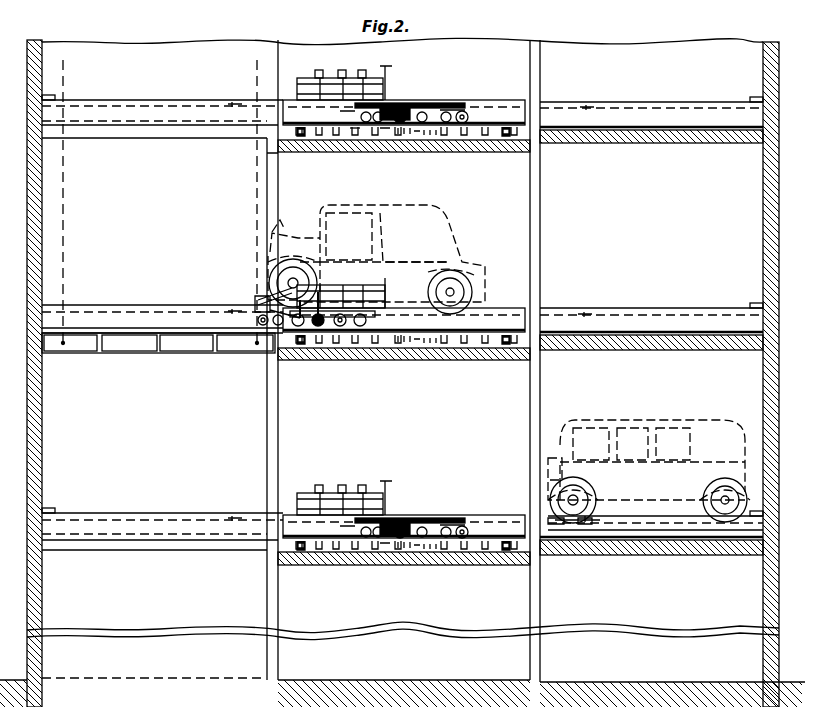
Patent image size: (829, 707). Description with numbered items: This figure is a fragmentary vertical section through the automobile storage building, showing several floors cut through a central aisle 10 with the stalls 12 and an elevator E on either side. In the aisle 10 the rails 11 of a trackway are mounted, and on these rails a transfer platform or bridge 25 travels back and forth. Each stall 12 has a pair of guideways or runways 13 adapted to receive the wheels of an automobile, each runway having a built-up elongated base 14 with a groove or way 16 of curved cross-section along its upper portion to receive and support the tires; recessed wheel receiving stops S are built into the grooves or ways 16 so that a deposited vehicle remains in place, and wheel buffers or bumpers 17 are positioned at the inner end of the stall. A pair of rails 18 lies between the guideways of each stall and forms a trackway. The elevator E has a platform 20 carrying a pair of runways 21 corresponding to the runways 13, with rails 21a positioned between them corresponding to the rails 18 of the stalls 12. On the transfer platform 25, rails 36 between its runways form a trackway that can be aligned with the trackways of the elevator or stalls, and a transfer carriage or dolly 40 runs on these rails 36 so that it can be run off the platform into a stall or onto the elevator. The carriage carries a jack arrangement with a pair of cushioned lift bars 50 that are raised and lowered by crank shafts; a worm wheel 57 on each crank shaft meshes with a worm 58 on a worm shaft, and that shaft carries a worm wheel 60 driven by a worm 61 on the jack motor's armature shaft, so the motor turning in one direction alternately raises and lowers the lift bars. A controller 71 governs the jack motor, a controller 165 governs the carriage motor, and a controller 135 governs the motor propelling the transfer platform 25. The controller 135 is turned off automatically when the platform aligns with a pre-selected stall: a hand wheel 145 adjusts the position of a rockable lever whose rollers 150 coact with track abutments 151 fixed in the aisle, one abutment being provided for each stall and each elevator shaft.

The aisle 10 is at (332, 136).
The rails 11 is at (301, 137).
The stall 12 is at (142, 99).
The guideways or runways 13 is at (660, 532).
The elongated base 14 is at (662, 330).
The groove or way 16 is at (628, 307).
The wheel buffers or bumpers 17 is at (58, 96).
The rails 18 is at (660, 130).
The platform 20 is at (142, 352).
The runways 21 is at (90, 304).
The rails 21a is at (172, 327).
The transfer platform or bridge 25 is at (492, 104).
The rails 36 is at (486, 130).
The transfer carriage or dolly 40 is at (430, 106).
The lift bars 50 is at (404, 108).
The worm wheel 57 is at (359, 131).
The worms 58 is at (355, 111).
The worm wheel 60 is at (394, 108).
The worm 61 is at (376, 576).
The controller 71 is at (344, 70).
The controller 135 is at (364, 70).
The hand wheel 145 is at (390, 67).
The rollers 150 is at (420, 135).
The track abutments 151 is at (410, 136).
The controller 165 is at (332, 72).
The wheel receiving stops S is at (232, 101).
The elevator E is at (130, 295).